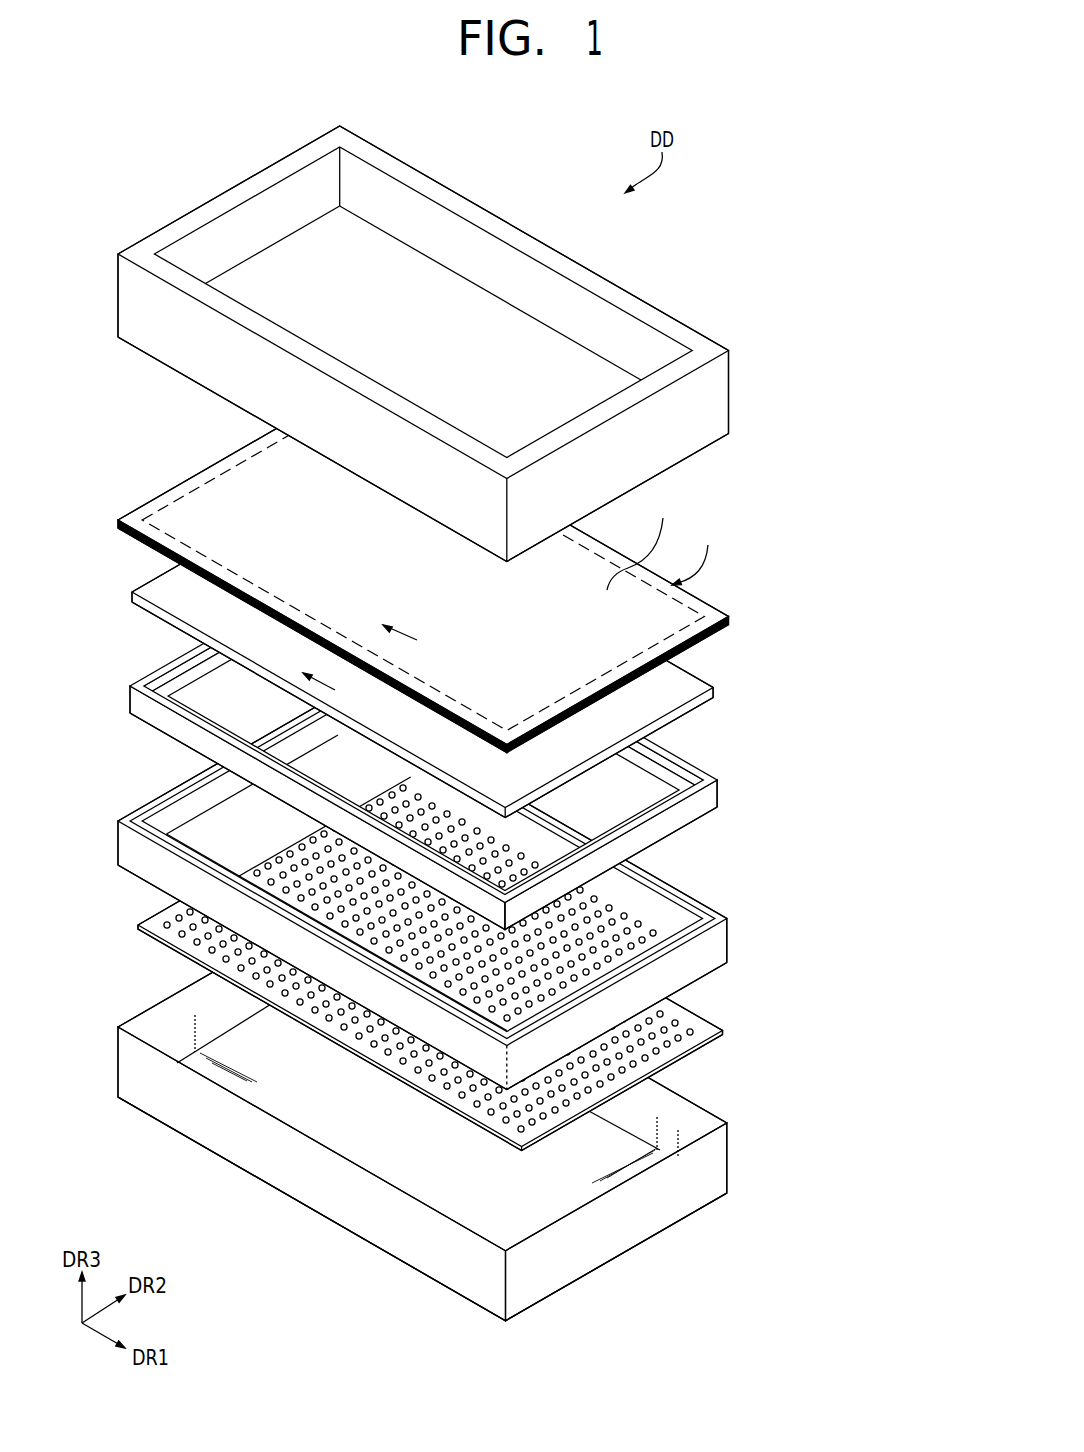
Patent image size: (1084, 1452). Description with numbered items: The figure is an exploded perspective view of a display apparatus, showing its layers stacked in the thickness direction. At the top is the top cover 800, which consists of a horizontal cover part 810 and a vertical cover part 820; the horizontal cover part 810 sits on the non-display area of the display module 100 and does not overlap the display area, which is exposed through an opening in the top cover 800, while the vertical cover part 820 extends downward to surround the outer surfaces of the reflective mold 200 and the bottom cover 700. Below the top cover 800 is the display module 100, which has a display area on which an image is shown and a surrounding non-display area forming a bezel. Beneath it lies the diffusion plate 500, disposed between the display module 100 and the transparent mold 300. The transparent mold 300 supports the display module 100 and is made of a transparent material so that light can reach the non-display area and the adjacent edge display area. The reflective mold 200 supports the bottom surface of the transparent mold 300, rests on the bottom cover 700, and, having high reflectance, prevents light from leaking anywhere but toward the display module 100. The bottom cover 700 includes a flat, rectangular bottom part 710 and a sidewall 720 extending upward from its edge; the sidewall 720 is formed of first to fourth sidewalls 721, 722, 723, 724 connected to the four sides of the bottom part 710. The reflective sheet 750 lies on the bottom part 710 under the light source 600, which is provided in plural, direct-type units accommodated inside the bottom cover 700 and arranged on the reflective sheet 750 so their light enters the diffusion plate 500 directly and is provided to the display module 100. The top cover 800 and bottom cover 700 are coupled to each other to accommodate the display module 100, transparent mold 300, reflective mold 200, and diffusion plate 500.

The display module 100 is at (736, 616).
The reflective mold 200 is at (714, 893).
The transparent mold 300 is at (708, 765).
The diffusion plate 500 is at (716, 689).
The light source 600 is at (680, 1013).
The bottom cover 700 is at (528, 1128).
The bottom part 710 is at (613, 1147).
The sidewall 720 is at (496, 1184).
The first sidewall 721 is at (491, 1280).
The second sidewall 722 is at (677, 1203).
The third sidewall 723 is at (680, 1130).
The fourth sidewall 724 is at (220, 1012).
The reflective sheet 750 is at (475, 980).
The top cover 800 is at (497, 344).
The horizontal cover part 810 is at (707, 342).
The vertical cover part 820 is at (817, 305).